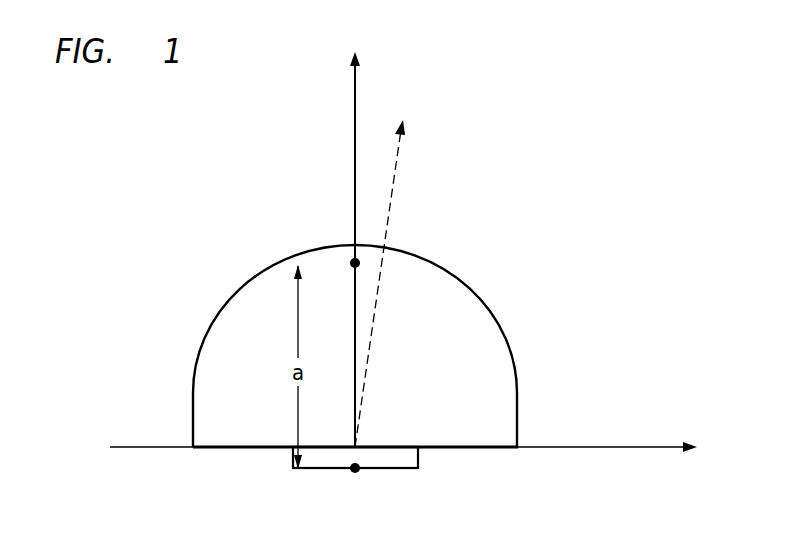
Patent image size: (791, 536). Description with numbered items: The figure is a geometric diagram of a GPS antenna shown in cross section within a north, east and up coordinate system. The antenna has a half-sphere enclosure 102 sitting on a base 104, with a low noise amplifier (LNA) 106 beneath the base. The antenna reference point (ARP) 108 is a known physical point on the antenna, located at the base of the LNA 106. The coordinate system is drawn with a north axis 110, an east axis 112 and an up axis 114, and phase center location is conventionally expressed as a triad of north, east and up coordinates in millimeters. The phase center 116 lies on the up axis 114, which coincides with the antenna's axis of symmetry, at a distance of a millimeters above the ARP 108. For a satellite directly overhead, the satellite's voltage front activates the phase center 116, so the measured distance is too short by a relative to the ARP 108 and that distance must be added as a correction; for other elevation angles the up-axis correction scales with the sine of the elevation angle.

The half-sphere enclosure 102 is at (484, 303).
The base 104 is at (245, 449).
The low noise amplifier (LNA) 106 is at (419, 452).
The antenna reference point (ARP) 108 is at (357, 471).
The north axis 110 is at (394, 181).
The east axis 112 is at (616, 446).
The up axis 114 is at (353, 103).
The phase center 116 is at (354, 268).